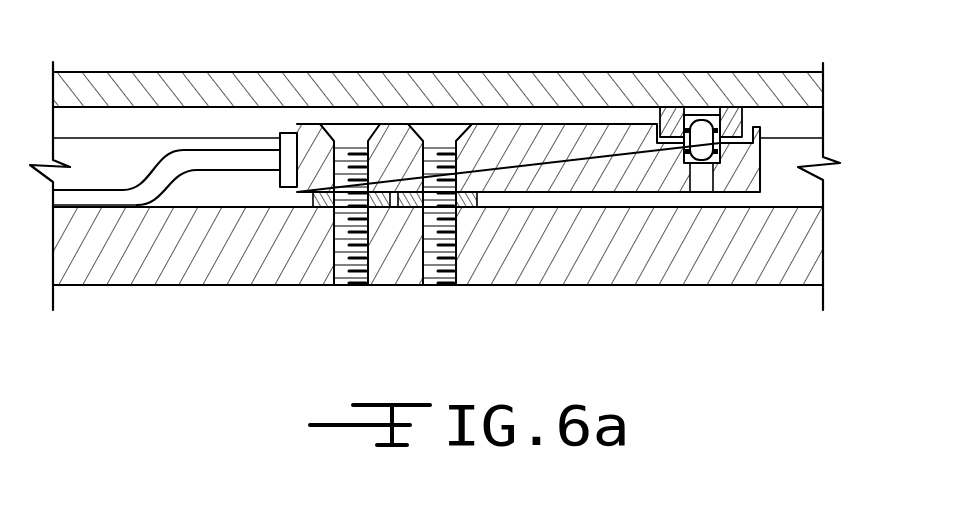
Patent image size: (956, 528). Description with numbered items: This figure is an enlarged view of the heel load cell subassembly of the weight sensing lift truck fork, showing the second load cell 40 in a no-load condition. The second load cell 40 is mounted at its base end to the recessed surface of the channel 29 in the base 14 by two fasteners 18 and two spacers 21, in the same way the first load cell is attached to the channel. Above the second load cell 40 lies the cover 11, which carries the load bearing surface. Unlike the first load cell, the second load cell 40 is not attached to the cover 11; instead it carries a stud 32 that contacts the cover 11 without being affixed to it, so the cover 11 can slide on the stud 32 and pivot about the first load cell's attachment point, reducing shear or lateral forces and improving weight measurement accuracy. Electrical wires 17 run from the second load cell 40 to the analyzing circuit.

The cover 11 is at (97, 87).
The base 14 is at (625, 257).
The electrical wires 17 is at (207, 158).
The fasteners 18 is at (347, 132).
The spacers 21 is at (315, 200).
The channel 29 is at (207, 192).
The stud 32 is at (698, 110).
The second load cell 40 is at (538, 147).